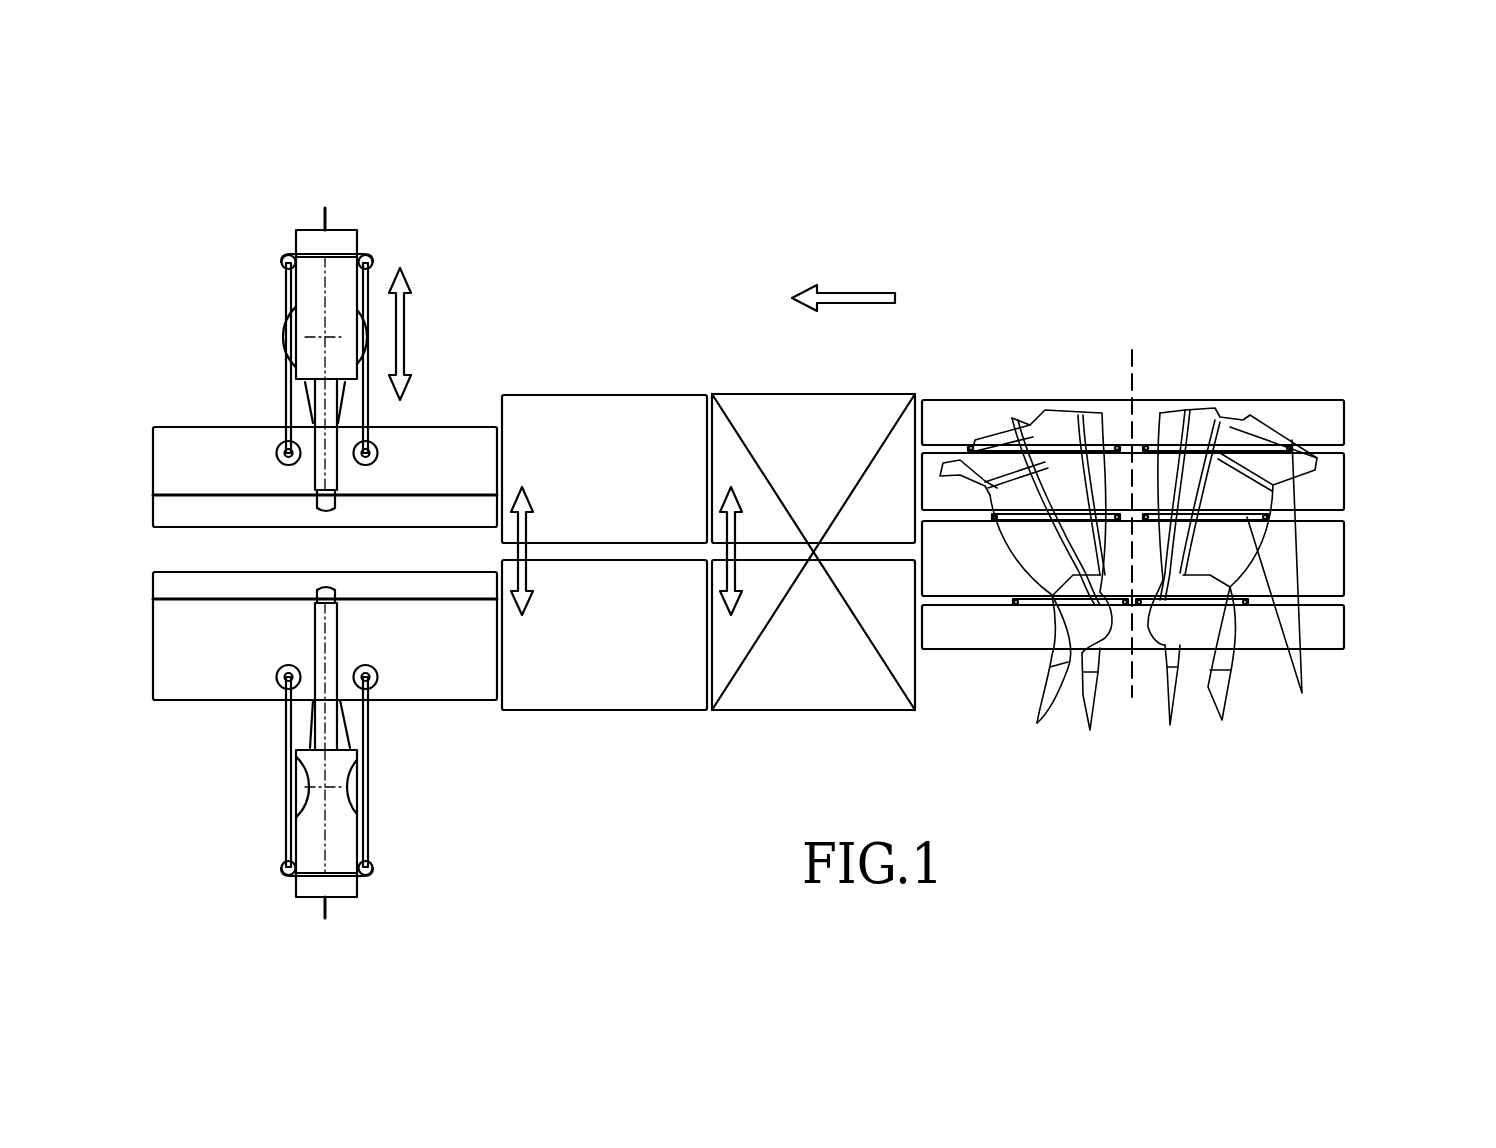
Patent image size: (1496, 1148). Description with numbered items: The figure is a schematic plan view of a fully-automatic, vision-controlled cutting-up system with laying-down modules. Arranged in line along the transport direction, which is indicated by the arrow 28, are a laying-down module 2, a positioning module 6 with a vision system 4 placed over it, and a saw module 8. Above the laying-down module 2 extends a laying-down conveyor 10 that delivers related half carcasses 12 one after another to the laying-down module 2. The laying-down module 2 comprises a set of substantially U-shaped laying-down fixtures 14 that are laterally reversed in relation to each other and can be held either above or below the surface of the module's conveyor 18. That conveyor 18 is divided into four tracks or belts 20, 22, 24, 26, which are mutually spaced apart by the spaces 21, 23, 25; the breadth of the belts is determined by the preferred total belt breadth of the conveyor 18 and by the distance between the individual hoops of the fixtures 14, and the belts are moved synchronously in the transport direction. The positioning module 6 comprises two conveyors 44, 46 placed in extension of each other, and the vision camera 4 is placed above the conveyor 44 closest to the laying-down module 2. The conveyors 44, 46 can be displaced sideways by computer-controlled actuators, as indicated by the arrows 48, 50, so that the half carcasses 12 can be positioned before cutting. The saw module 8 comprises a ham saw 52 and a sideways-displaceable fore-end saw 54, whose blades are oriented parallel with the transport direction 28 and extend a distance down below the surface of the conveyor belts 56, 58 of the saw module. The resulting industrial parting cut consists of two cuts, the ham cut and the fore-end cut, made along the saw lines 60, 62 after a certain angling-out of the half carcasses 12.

The laying-down module 2 is at (1133, 342).
The vision system 4 is at (853, 490).
The positioning module 6 is at (717, 358).
The saw module 8 is at (388, 238).
The laying-down conveyor 10 is at (1135, 383).
The half carcasses 12 is at (1045, 427).
The laying-down fixtures 14 is at (1284, 583).
The conveyor 18 is at (1335, 640).
The track/belt 20 is at (1300, 435).
The space 21 is at (1345, 443).
The track/belt 22 is at (1340, 503).
The space 23 is at (1345, 517).
The track/belt 24 is at (1337, 567).
The space 25 is at (1345, 600).
The track/belt 26 is at (1303, 641).
The arrow 28 is at (835, 297).
The conveyor 44 is at (787, 638).
The conveyor 46 is at (587, 622).
The arrow 48 is at (735, 500).
The arrow 50 is at (525, 500).
The ham saw 52 is at (313, 807).
The fore-end saw 54 is at (315, 323).
The conveyor belt 56 is at (418, 482).
The conveyor belt 58 is at (433, 667).
The saw line 60 is at (420, 597).
The saw line 62 is at (380, 498).